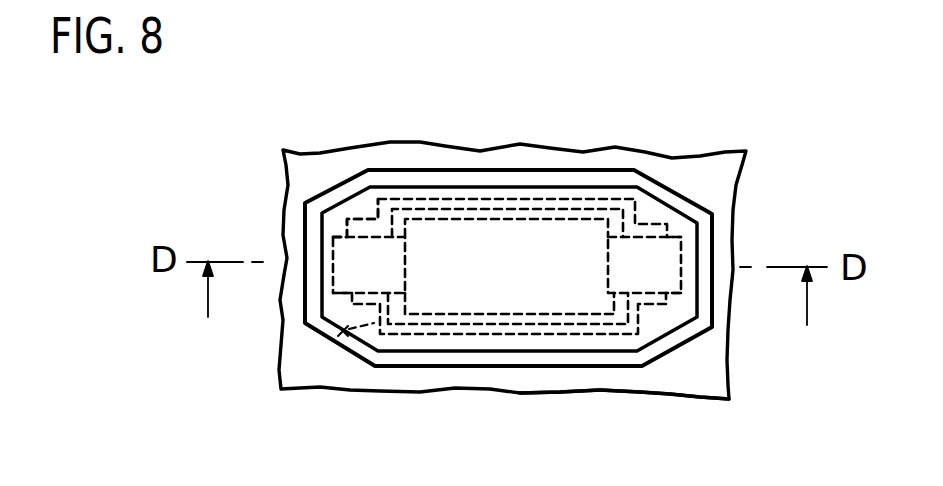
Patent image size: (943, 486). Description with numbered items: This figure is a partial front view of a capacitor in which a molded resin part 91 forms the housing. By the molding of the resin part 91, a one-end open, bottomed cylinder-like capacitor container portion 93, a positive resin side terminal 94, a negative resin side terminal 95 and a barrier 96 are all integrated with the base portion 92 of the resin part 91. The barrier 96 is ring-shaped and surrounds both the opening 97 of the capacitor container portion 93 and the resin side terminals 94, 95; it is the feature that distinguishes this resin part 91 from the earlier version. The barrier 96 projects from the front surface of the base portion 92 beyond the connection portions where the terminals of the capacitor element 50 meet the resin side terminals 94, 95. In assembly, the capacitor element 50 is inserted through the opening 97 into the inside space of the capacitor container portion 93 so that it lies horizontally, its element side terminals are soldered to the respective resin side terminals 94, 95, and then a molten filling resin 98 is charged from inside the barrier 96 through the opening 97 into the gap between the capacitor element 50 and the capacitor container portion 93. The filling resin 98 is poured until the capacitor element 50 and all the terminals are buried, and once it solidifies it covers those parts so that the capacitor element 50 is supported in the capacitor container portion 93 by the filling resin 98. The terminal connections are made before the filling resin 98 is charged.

The capacitor element 50 is at (517, 218).
The resin part 91 is at (747, 152).
The base portion 92 is at (733, 378).
The capacitor container portion 93 is at (338, 331).
The positive resin side terminal 94 is at (670, 186).
The negative resin side terminal 95 is at (350, 219).
The barrier 96 is at (428, 186).
The opening 97 is at (417, 324).
The filling resin 98 is at (597, 196).